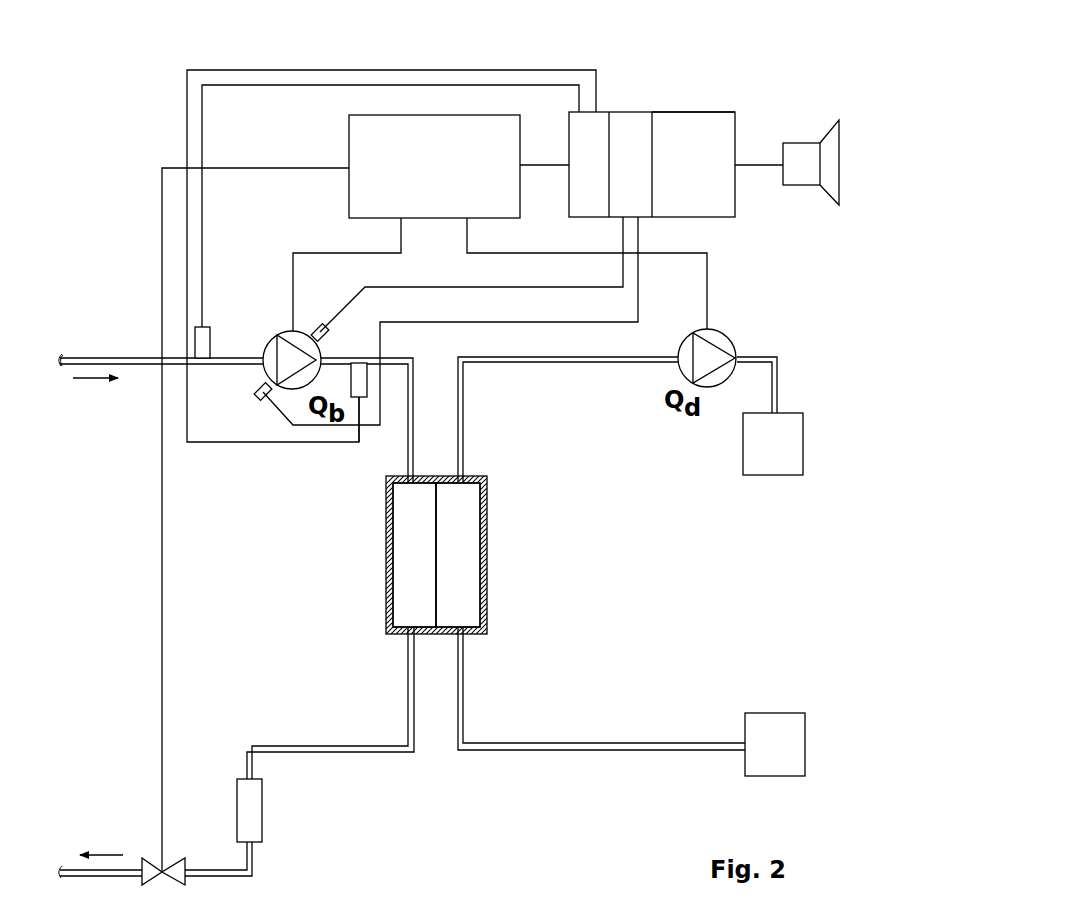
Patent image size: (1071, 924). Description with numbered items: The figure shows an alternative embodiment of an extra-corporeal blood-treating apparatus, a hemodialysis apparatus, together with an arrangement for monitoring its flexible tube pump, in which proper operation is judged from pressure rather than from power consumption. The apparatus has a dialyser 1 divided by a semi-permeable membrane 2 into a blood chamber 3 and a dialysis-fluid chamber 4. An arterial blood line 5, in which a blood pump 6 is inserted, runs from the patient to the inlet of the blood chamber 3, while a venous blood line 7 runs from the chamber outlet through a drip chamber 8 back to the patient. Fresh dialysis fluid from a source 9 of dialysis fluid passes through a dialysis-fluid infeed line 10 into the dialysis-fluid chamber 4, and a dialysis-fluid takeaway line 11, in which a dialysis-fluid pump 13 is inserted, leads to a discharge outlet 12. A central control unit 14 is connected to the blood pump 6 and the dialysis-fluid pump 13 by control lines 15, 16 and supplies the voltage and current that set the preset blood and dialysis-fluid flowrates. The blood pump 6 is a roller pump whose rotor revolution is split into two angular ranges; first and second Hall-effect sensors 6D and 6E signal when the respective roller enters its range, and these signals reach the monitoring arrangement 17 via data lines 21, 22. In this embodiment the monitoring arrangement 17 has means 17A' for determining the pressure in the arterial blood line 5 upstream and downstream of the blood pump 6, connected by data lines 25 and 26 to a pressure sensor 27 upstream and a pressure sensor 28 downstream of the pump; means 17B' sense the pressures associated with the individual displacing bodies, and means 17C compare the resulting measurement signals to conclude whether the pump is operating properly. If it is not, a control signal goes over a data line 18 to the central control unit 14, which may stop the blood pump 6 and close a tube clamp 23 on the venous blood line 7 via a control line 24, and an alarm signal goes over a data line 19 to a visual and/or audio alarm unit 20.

The dialyser 1 is at (495, 573).
The semi-permeable membrane 2 is at (437, 605).
The blood chamber 3 is at (398, 518).
The dialysis-fluid chamber 4 is at (476, 519).
The arterial blood line 5 is at (93, 357).
The blood pump 6 is at (272, 338).
The first Hall-effect sensor 6D is at (316, 326).
The second Hall-effect sensor 6E is at (256, 394).
The venous blood line 7 is at (353, 746).
The drip chamber 8 is at (262, 820).
The source of dialysis fluid 9 is at (805, 765).
The dialysis-fluid infeed line 10 is at (585, 743).
The dialysis-fluid takeaway line 11 is at (583, 362).
The discharge outlet 12 is at (803, 465).
The dialysis-fluid pump 13 is at (727, 337).
The central control unit 14 is at (349, 135).
The control line 15 is at (313, 253).
The control line 16 is at (707, 255).
The monitoring arrangement 17 is at (738, 105).
The means for determining the pressure 17A' is at (565, 182).
The means for sensing the pressures associated with the displacing bodies 17B' is at (649, 131).
The means for comparing the measurement signals 17C is at (697, 122).
The data line 18 is at (545, 163).
The data line 19 is at (772, 160).
The alarm unit 20 is at (808, 141).
The data line 21 is at (436, 287).
The data line 22 is at (368, 442).
The tube clamp 23 is at (165, 860).
The control line 24 is at (162, 705).
The data line 25 is at (248, 87).
The data line 26 is at (284, 443).
The pressure sensor 27 is at (212, 343).
The pressure sensor 28 is at (359, 363).